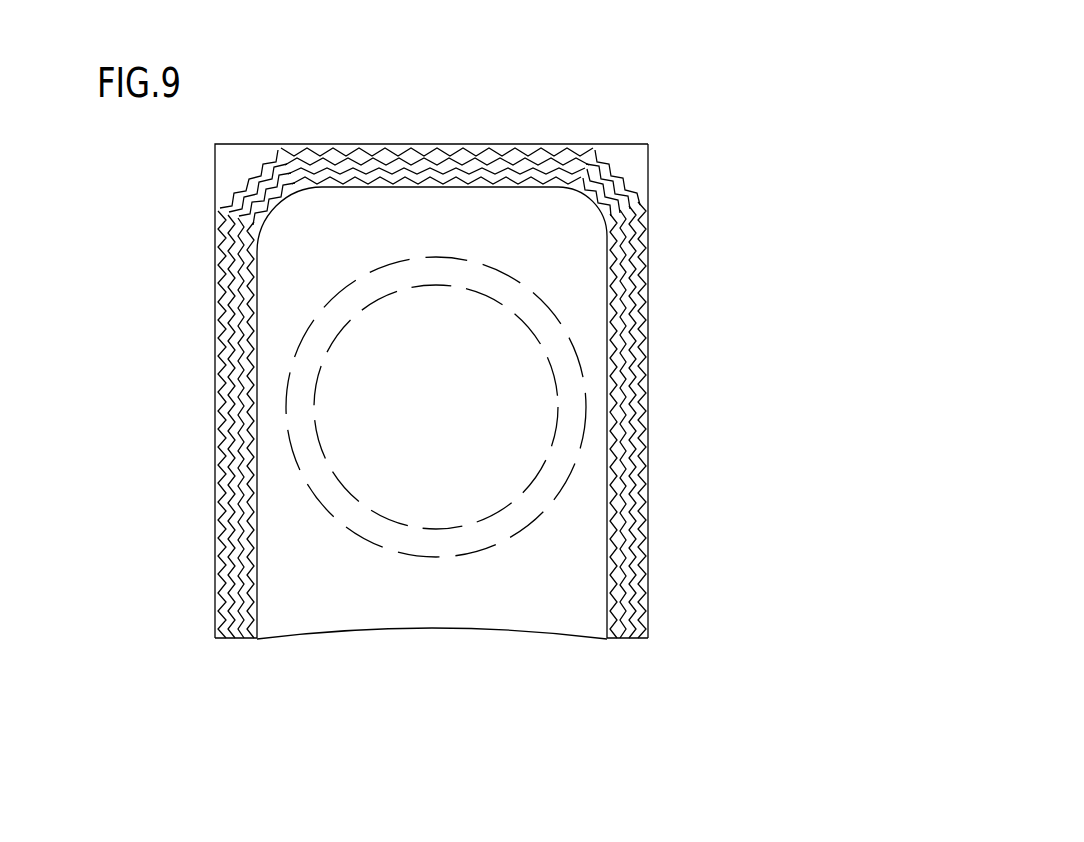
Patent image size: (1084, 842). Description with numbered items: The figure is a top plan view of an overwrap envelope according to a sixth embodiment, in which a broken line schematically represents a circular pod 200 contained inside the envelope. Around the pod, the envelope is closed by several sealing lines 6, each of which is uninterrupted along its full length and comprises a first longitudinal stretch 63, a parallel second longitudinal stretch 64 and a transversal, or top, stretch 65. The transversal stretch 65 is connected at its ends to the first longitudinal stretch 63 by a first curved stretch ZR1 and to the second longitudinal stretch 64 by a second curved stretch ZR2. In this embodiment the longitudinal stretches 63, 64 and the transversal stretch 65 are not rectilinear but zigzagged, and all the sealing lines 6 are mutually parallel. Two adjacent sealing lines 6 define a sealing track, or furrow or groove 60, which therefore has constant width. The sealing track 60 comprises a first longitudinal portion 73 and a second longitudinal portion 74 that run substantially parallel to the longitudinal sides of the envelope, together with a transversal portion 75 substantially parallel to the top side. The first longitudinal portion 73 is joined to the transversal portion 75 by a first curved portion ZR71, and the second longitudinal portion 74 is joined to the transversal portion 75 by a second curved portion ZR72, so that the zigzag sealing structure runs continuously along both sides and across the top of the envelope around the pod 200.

The sealing line 6 is at (435, 366).
The sealing track 60 is at (238, 643).
The first longitudinal stretch 63 is at (172, 424).
The second longitudinal stretch 64 is at (695, 420).
The transversal stretch 65 is at (437, 139).
The first longitudinal portion 73 is at (245, 411).
The second longitudinal portion 74 is at (633, 413).
The transversal portion 75 is at (439, 164).
The circular pod 200 is at (442, 497).
The first curved stretch ZR1 is at (254, 172).
The second curved stretch ZR2 is at (638, 200).
The first curved portion ZR71 is at (227, 203).
The second curved portion ZR72 is at (603, 173).